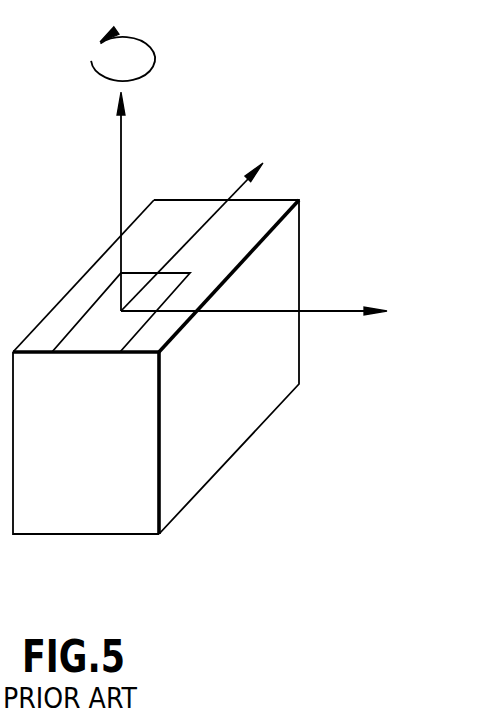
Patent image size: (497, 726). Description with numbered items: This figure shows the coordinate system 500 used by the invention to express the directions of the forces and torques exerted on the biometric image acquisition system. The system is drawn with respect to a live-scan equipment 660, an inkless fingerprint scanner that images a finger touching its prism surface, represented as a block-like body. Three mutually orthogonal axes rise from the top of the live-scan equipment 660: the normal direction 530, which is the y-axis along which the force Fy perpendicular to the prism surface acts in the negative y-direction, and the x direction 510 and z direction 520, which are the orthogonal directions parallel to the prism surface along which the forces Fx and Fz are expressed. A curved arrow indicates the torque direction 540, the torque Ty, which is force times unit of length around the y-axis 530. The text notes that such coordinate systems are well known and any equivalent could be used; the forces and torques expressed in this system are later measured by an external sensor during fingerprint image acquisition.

The coordinate system 500 is at (131, 569).
The x direction of force 510 is at (336, 311).
The z direction of force 520 is at (238, 188).
The normal force direction (y-axis) 530 is at (121, 148).
The torque direction Ty 540 is at (108, 43).
The live-scan equipment 660 is at (110, 496).